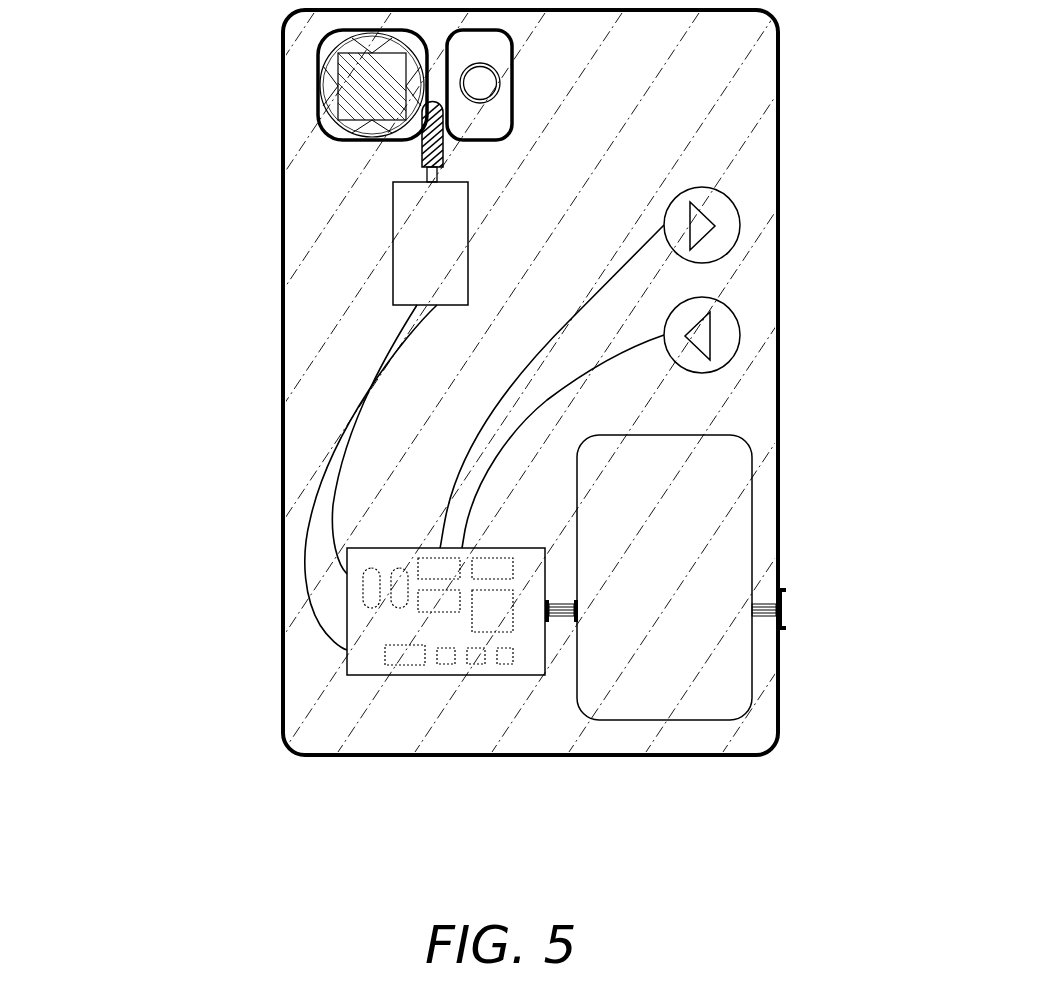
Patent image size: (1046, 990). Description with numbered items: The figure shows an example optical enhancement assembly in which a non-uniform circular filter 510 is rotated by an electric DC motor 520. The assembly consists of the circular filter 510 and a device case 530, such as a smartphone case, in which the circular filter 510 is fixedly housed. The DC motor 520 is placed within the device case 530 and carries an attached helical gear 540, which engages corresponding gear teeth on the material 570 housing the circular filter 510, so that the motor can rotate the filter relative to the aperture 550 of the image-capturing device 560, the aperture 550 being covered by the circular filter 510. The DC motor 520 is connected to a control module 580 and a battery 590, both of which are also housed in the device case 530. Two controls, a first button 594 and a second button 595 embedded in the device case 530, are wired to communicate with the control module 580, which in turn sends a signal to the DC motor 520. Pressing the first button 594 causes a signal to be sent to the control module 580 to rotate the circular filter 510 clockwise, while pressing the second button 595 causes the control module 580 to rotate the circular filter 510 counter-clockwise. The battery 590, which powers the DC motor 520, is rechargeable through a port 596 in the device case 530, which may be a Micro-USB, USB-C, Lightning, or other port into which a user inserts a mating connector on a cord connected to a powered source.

The circular filter 510 is at (356, 57).
The DC motor 520 is at (410, 230).
The device case 530 is at (314, 283).
The helical gear 540 is at (420, 155).
The aperture 550 is at (310, 92).
The image-capturing device 560 is at (242, 367).
The material housing the circular filter 570 is at (421, 50).
The control module 580 is at (372, 628).
The battery 590 is at (683, 553).
The first button 594 is at (732, 225).
The second button 595 is at (732, 335).
The port 596 is at (800, 610).